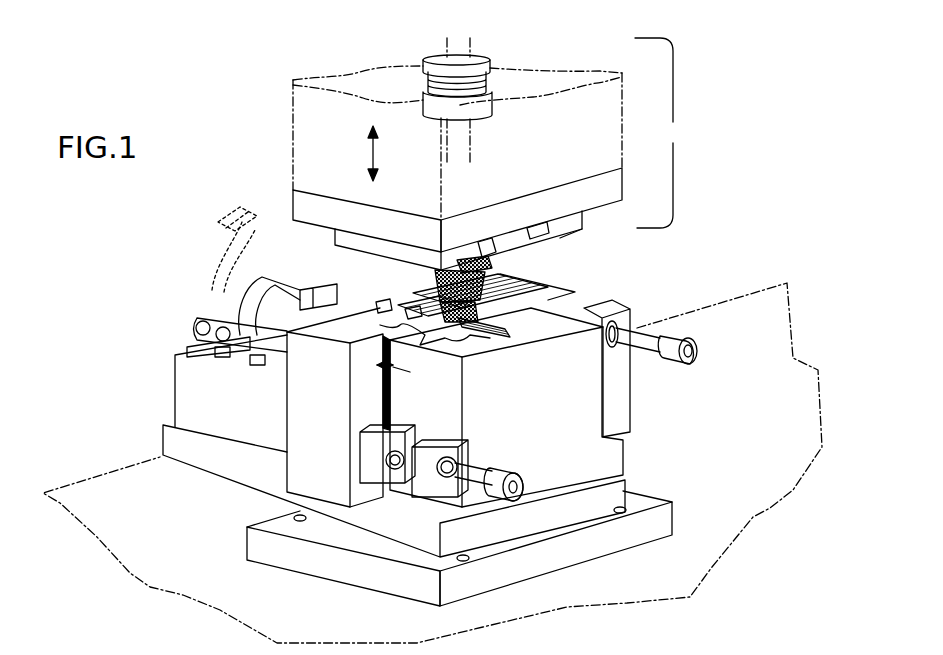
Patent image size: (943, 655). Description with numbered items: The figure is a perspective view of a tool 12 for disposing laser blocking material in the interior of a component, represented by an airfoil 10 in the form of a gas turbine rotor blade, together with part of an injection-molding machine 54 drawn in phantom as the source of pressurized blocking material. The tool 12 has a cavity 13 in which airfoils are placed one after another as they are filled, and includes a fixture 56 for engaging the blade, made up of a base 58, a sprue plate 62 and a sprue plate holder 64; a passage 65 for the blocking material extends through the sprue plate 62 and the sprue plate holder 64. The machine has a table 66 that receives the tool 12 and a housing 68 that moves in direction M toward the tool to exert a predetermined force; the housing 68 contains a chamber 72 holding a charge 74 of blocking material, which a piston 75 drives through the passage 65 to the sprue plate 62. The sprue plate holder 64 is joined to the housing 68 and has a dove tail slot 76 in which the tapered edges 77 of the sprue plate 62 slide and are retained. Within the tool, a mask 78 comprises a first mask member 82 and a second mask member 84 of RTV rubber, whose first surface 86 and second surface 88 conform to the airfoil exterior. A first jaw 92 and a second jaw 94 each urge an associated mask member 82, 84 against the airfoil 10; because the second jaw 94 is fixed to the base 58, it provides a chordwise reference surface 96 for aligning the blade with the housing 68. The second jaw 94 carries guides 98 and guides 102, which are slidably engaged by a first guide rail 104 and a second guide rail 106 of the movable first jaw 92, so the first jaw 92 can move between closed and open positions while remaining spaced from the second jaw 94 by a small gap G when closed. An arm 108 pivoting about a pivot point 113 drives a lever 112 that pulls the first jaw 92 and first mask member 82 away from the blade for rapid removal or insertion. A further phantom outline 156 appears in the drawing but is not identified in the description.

The airfoil 10 is at (492, 267).
The tool 12 is at (127, 385).
The cavity 13 is at (530, 298).
The injection-molding machine 54 is at (659, 133).
The fixture 56 is at (268, 482).
The base 58 is at (593, 220).
The sprue plate 62 is at (507, 243).
The sprue plate holder 64 is at (352, 241).
The passage 65 is at (460, 150).
The table 66 is at (108, 485).
The housing 68 is at (622, 105).
The chamber 72 is at (492, 91).
The charge 74 is at (428, 81).
The piston 75 is at (488, 68).
The dove tail slot 76 is at (560, 238).
The tapered edges 77 is at (540, 231).
The mask 78 is at (388, 307).
The first mask member 82 is at (413, 313).
The second mask member 84 is at (520, 313).
The first surface 86 is at (387, 308).
The second surface 88 is at (447, 348).
The first jaw 92 is at (323, 368).
The second jaw 94 is at (442, 380).
The reference surface 96 is at (487, 337).
The guides 98 is at (447, 487).
The guides 102 is at (614, 357).
The first guide rail 104 is at (473, 473).
The second guide rail 106 is at (643, 331).
The arm 108 is at (263, 278).
The lever 112 is at (257, 330).
The pivot point 113 is at (197, 332).
The enclosure outline 156 is at (802, 443).
The gap G is at (402, 375).
The direction M is at (385, 153).